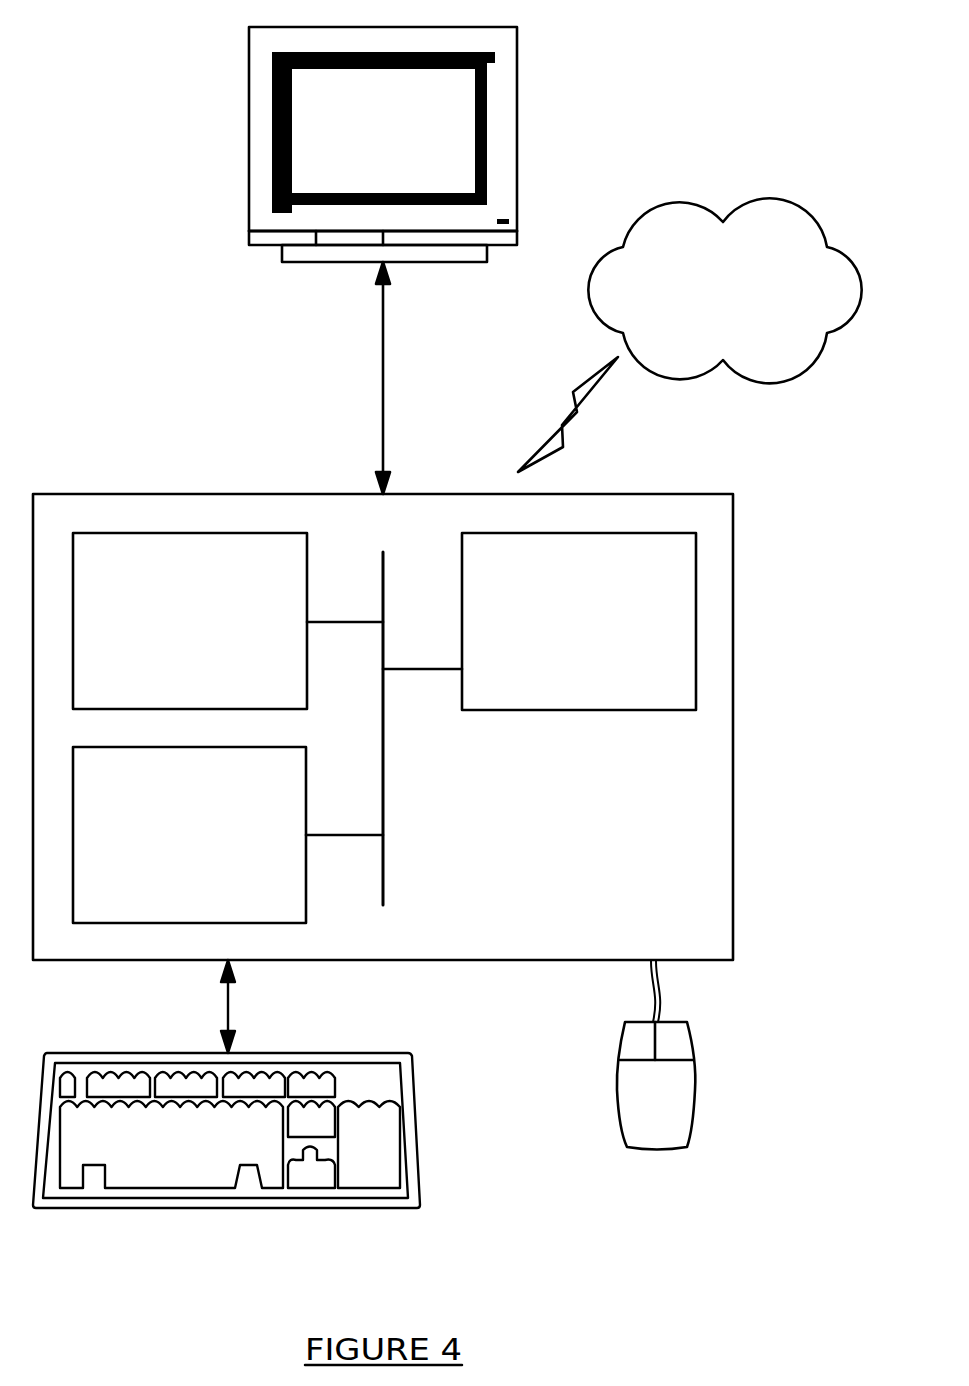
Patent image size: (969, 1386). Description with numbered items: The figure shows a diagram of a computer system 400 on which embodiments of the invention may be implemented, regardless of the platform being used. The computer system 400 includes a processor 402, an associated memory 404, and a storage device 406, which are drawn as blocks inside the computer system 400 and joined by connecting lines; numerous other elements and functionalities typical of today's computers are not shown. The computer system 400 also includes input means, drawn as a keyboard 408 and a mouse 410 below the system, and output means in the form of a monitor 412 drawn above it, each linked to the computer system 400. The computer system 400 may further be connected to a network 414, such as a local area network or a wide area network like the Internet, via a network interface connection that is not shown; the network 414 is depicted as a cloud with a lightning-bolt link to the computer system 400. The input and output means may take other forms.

The computer system 400 is at (769, 558).
The processor 402 is at (556, 633).
The memory 404 is at (166, 633).
The storage device 406 is at (166, 847).
The keyboard 408 is at (146, 1158).
The mouse 410 is at (633, 1110).
The monitor 412 is at (361, 147).
The network 414 is at (701, 302).